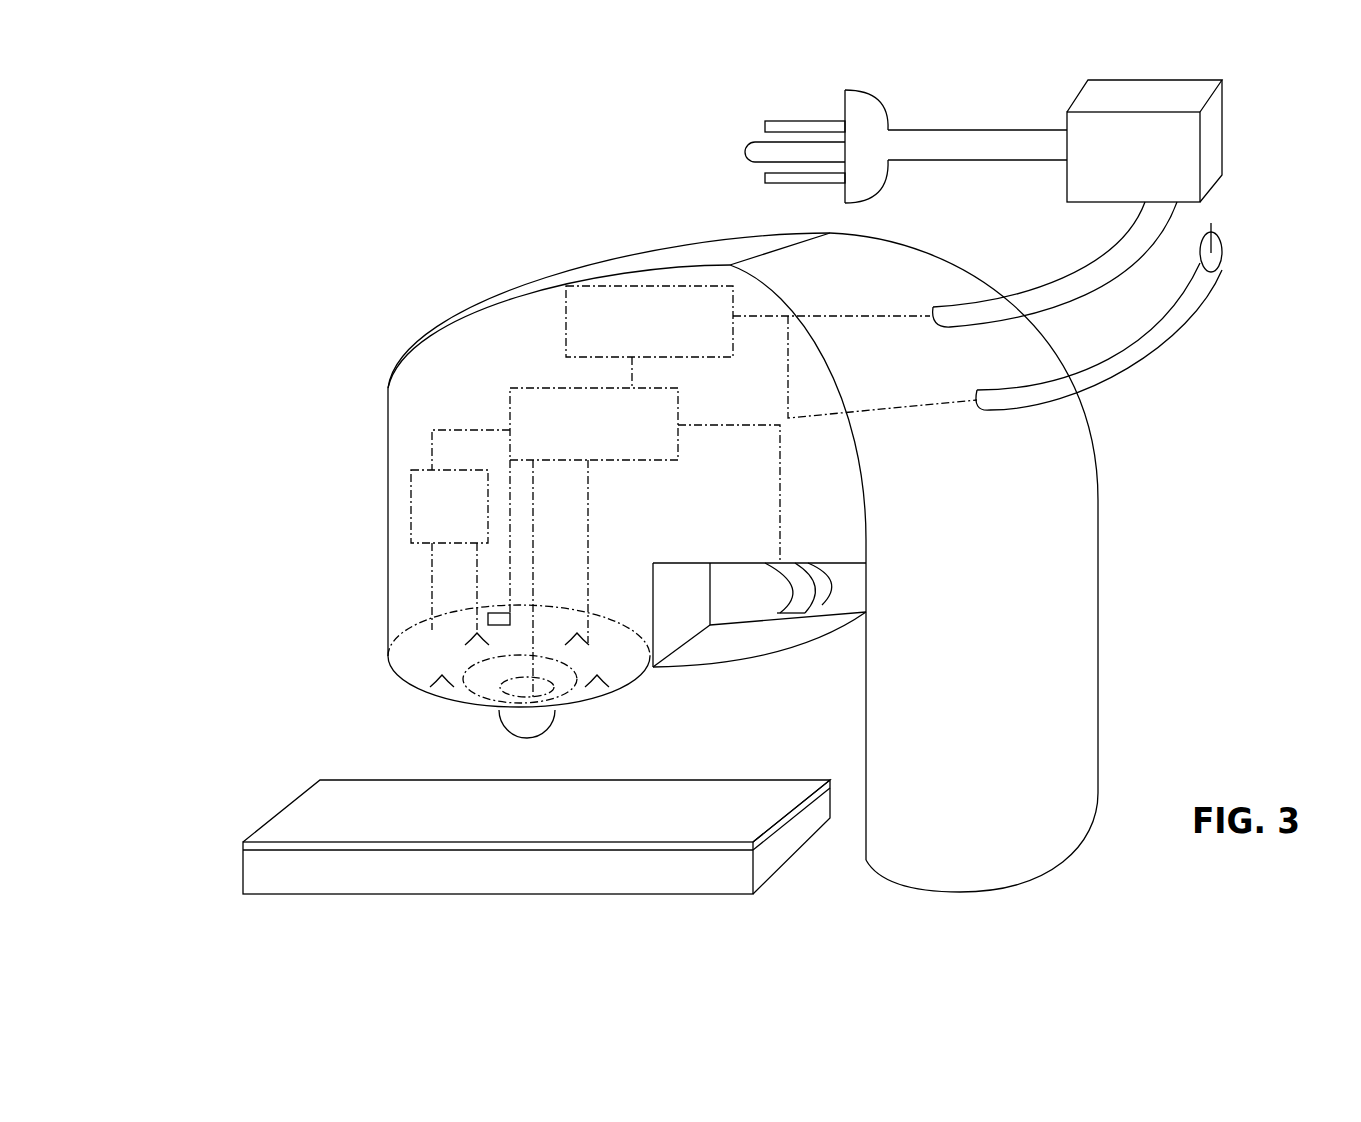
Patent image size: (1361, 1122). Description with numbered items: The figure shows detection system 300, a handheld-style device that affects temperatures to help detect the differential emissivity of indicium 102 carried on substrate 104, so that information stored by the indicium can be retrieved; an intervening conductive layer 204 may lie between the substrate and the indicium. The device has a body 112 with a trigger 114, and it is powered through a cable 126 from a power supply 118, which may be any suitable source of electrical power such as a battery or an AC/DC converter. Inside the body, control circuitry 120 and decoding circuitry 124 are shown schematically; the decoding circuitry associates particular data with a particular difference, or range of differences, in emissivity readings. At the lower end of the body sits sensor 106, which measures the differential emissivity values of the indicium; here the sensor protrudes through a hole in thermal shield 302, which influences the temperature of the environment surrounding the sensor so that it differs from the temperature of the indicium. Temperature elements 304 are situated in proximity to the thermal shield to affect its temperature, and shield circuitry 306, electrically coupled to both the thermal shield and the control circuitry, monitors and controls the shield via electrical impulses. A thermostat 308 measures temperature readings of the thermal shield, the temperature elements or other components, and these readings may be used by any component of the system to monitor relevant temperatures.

The detection system 300 is at (813, 91).
The indicium 102 is at (430, 785).
The substrate 104 is at (489, 842).
The conductive layer 204 is at (320, 830).
The sensor 106 is at (543, 717).
The body 112 is at (467, 357).
The trigger 114 is at (800, 603).
The power supply 118 is at (1157, 141).
The control circuitry 120 is at (555, 402).
The decoding circuitry 124 is at (610, 307).
The cable 126 is at (1165, 340).
The thermal shield 302 is at (410, 678).
The temperature elements 304 is at (470, 640).
The shield circuitry 306 is at (445, 490).
The thermostat 308 is at (488, 612).